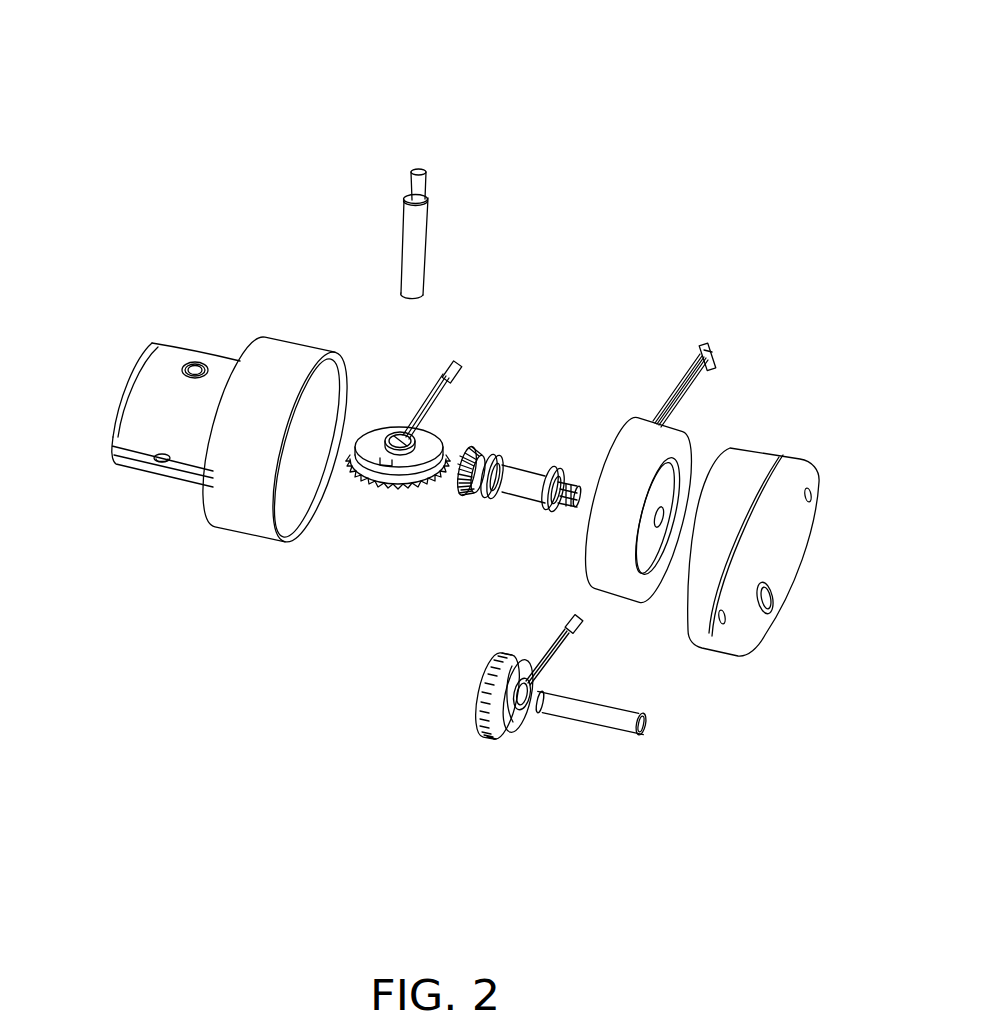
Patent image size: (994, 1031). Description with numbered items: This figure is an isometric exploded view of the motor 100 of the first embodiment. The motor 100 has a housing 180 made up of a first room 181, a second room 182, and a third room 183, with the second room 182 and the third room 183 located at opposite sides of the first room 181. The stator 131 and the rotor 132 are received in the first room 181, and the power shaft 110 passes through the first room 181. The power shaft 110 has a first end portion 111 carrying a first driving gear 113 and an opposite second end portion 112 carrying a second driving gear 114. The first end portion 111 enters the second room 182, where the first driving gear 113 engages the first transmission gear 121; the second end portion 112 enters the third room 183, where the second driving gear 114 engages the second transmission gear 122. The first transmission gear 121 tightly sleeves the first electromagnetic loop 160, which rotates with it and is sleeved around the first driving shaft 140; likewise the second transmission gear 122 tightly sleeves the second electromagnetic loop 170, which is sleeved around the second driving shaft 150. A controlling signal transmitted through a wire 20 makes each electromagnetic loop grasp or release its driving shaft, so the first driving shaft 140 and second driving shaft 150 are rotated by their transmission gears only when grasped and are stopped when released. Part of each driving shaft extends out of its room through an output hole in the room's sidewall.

The motor 100 is at (502, 80).
The wire 20 is at (428, 402).
The power shaft 110 is at (518, 478).
The first end portion 111 is at (460, 446).
The second end portion 112 is at (575, 478).
The first driving gear 113 is at (482, 452).
The second driving gear 114 is at (574, 500).
The first transmission gear 121 is at (410, 470).
The second transmission gear 122 is at (493, 663).
The stator 131 is at (680, 506).
The rotor 132 is at (657, 545).
The first driving shaft 140 is at (410, 237).
The second driving shaft 150 is at (613, 720).
The first electromagnetic loop 160 is at (390, 484).
The second electromagnetic loop 170 is at (469, 695).
The housing 180 is at (453, 526).
The first room 181 is at (237, 523).
The second room 182 is at (150, 385).
The third room 183 is at (743, 625).